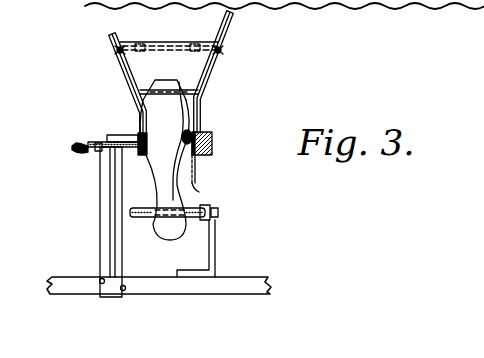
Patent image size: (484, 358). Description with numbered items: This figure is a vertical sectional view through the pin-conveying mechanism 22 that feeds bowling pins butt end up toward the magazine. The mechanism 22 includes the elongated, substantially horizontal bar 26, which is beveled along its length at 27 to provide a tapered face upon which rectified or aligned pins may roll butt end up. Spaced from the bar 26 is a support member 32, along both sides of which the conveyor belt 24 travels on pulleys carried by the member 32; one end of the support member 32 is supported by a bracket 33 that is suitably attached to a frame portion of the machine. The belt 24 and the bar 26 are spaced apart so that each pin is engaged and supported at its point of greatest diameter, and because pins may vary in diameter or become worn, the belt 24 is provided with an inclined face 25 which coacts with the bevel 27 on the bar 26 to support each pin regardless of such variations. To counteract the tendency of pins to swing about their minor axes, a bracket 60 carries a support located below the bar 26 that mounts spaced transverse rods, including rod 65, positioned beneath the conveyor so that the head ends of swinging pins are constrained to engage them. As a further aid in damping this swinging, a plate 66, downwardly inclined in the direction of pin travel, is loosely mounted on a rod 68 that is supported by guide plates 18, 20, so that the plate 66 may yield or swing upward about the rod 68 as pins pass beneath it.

The guide plate 18 is at (234, 18).
The guide plate 20 is at (108, 35).
The mechanism 22 is at (98, 126).
The conveyor belt 24 is at (88, 142).
The inclined face 25 is at (72, 150).
The bar 26 is at (213, 147).
The bevel 27 is at (190, 130).
The support member 32 is at (97, 151).
The bracket 33 is at (103, 222).
The bracket 60 is at (212, 243).
The rod 65 is at (133, 218).
The plate 66 is at (186, 72).
The rod 68 is at (178, 30).